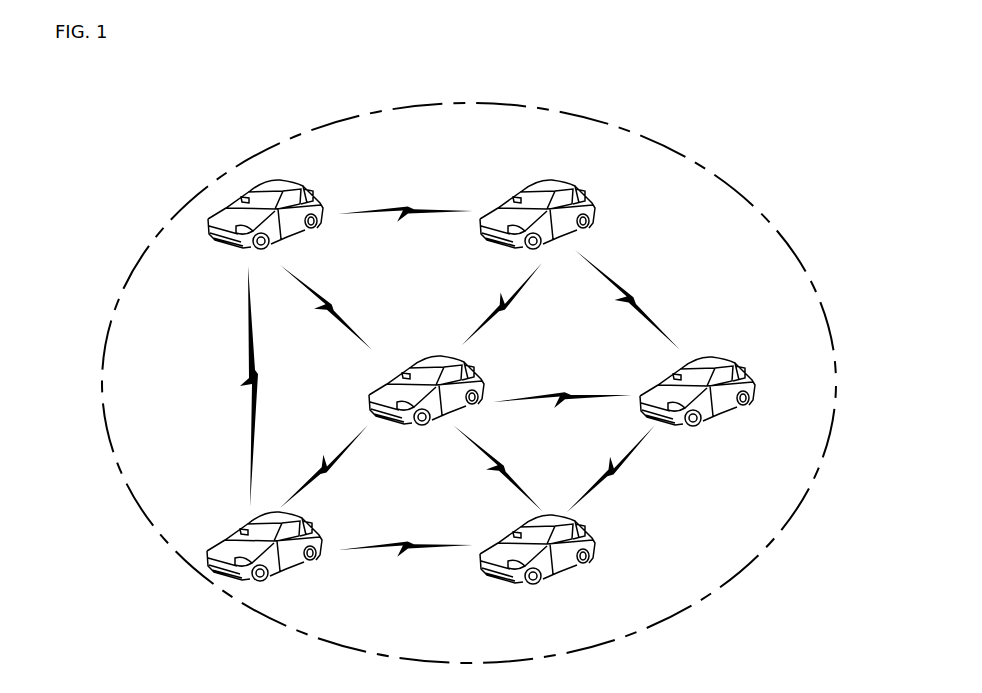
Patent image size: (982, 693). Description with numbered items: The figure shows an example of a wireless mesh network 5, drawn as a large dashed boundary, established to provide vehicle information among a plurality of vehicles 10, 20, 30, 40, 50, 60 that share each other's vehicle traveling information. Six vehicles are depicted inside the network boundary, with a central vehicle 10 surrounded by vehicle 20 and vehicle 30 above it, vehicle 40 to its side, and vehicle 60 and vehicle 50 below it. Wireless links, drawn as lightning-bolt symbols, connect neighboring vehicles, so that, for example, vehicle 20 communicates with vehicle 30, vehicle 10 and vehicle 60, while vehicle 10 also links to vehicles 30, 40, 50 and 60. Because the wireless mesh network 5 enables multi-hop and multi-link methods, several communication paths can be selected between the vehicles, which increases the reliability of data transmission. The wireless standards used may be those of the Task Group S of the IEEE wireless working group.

The wireless mesh network 5 is at (727, 180).
The vehicle 10 is at (486, 378).
The vehicle 20 is at (307, 185).
The vehicle 30 is at (577, 187).
The vehicle 40 is at (758, 378).
The vehicle 50 is at (600, 535).
The vehicle 60 is at (322, 524).